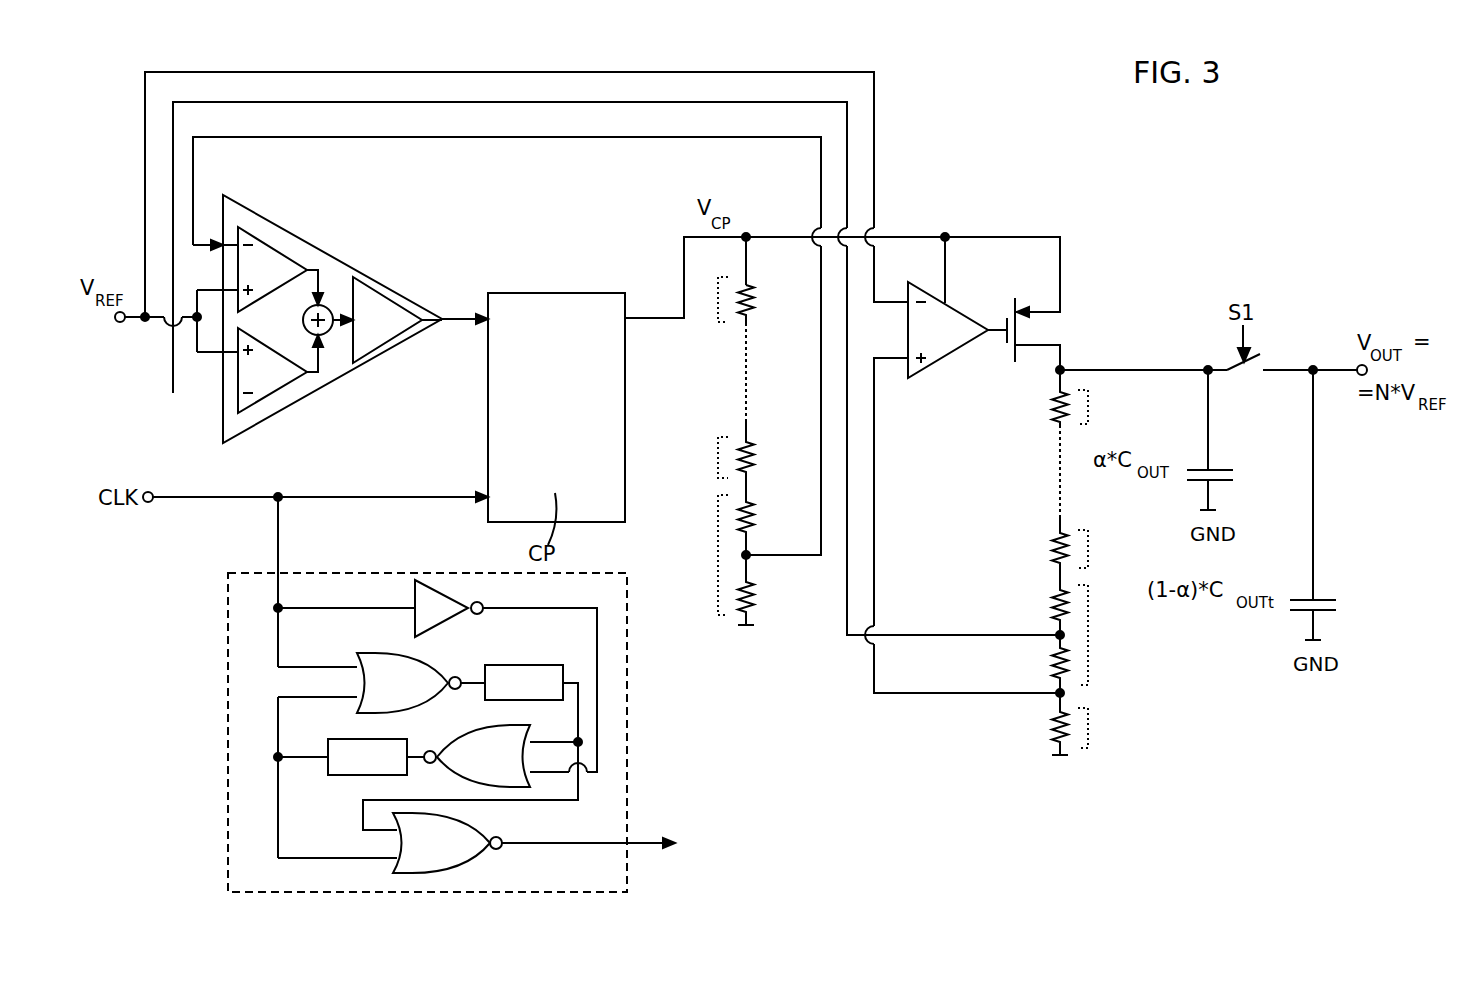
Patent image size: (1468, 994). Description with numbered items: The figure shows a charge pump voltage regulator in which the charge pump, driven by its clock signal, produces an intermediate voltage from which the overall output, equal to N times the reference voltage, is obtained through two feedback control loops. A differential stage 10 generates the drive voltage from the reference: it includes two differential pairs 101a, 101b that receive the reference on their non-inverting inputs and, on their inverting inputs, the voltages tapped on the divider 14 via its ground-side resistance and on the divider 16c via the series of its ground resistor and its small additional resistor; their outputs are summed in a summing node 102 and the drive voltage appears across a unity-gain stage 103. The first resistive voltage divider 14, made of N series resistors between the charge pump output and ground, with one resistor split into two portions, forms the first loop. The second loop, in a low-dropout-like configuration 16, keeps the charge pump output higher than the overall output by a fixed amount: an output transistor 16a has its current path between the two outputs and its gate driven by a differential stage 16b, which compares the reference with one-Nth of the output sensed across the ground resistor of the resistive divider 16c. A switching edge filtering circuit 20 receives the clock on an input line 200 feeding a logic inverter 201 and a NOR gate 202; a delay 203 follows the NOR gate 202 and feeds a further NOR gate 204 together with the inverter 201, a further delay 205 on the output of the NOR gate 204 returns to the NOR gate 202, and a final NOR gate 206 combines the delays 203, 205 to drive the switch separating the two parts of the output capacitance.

The differential stage 10 is at (338, 334).
The differential pair 101a is at (268, 258).
The differential pair 101b is at (268, 388).
The summing node 102 is at (325, 334).
The unity-gain stage 103 is at (375, 303).
The resistive voltage divider 14 is at (752, 672).
The feedback control loop circuit 16 is at (1018, 502).
The output transistor 16a is at (1090, 278).
The differential stage 16b is at (947, 385).
The resistive divider 16c is at (1062, 808).
The switching edge filtering circuit 20 is at (228, 760).
The input line 200 is at (434, 689).
The logic inverter 201 is at (440, 600).
The NOR gate 202 is at (380, 660).
The delay 203 is at (503, 672).
The NOR gate 204 is at (488, 735).
The delay 205 is at (342, 770).
The NOR gate 206 is at (460, 852).